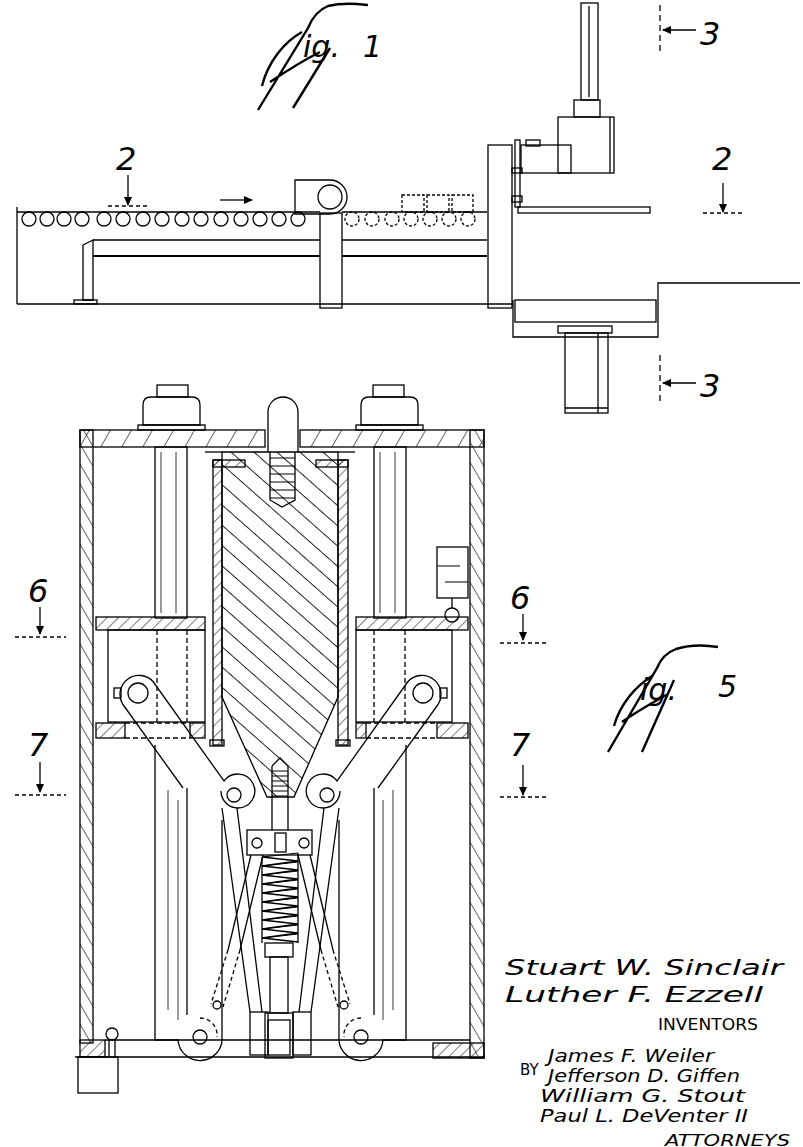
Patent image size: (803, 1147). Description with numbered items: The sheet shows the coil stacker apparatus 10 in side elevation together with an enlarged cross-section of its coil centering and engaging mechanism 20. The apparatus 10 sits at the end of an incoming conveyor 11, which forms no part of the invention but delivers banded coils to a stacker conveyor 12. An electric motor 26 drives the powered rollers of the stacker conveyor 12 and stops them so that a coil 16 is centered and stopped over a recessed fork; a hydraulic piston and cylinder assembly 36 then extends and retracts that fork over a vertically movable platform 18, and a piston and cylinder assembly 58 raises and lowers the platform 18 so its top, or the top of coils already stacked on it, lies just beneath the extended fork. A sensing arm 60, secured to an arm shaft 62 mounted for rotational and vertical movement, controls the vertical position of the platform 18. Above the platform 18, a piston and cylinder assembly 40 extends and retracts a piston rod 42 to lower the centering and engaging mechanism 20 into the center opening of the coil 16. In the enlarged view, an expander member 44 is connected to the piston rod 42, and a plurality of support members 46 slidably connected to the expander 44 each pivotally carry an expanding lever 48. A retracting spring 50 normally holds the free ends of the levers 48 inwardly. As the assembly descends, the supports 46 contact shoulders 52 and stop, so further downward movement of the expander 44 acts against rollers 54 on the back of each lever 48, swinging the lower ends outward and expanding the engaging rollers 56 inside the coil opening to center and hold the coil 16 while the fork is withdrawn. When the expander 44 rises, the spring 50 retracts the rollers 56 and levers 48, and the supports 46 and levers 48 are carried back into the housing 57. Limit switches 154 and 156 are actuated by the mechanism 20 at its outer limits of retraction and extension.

In FIG. 1, the coil stacker apparatus 10 is at (492, 142).
In FIG. 1, the conveyor 11 is at (184, 212).
In FIG. 1, the stacker conveyor 12 is at (355, 212).
In FIG. 1, the coil 16 is at (430, 200).
In FIG. 1, the platform 18 is at (578, 302).
In FIG. 1, the coil engaging and centering mechanism 20 is at (605, 132).
In FIG. 5, the coil engaging and centering mechanism 20 is at (487, 490).
In FIG. 1, the electric motor 26 is at (308, 182).
In FIG. 1, the hydraulic piston and cylinder assembly 36 is at (222, 246).
In FIG. 1, the piston and cylinder assembly 40 is at (582, 17).
In FIG. 5, the piston rod 42 is at (286, 396).
In FIG. 5, the expander member 44 is at (243, 550).
In FIG. 5, the support members 46 is at (136, 658).
In FIG. 5, the expanding lever 48 is at (200, 838).
In FIG. 5, the retracting spring 50 is at (290, 920).
In FIG. 5, the shoulders 52 is at (108, 1028).
In FIG. 5, the rollers 54 is at (222, 763).
In FIG. 5, the engaging rollers 56 is at (200, 1057).
In FIG. 5, the housing 57 is at (483, 550).
In FIG. 1, the piston and cylinder assembly 58 is at (600, 393).
In FIG. 1, the sensing arm 60 is at (612, 210).
In FIG. 1, the arm shaft 62 is at (523, 187).
In FIG. 5, the limit switch 154 is at (458, 572).
In FIG. 5, the limit switch 156 is at (90, 1075).